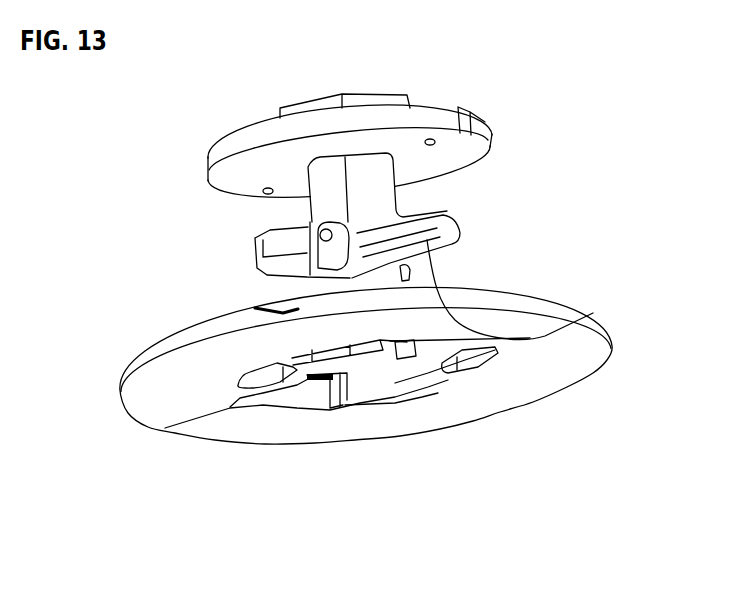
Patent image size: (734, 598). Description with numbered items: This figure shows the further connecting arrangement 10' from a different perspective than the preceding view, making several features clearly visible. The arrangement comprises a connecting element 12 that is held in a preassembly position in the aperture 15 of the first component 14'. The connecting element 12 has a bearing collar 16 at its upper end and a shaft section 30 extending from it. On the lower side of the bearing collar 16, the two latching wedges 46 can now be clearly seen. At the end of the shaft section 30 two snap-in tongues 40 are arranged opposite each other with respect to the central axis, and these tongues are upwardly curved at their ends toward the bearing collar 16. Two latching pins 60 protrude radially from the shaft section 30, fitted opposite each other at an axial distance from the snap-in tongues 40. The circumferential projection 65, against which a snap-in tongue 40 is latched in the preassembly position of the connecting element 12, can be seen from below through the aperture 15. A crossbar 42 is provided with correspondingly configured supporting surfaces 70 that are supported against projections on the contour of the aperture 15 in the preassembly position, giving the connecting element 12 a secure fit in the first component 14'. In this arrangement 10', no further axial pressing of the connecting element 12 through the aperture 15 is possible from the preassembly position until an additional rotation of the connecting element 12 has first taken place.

The further connecting arrangement 10' is at (359, 293).
The connecting element 12 is at (245, 112).
The first component 14' is at (396, 341).
The aperture 15 is at (345, 378).
The bearing collar 16 is at (383, 121).
The shaft section 30 is at (375, 200).
The snap-in tongues 40 is at (285, 310).
The crossbar 42 is at (447, 212).
The latching wedges 46 is at (272, 193).
The latching pins 60 is at (256, 270).
The circumferential projection 65 is at (405, 268).
The supporting surfaces 70 is at (577, 327).